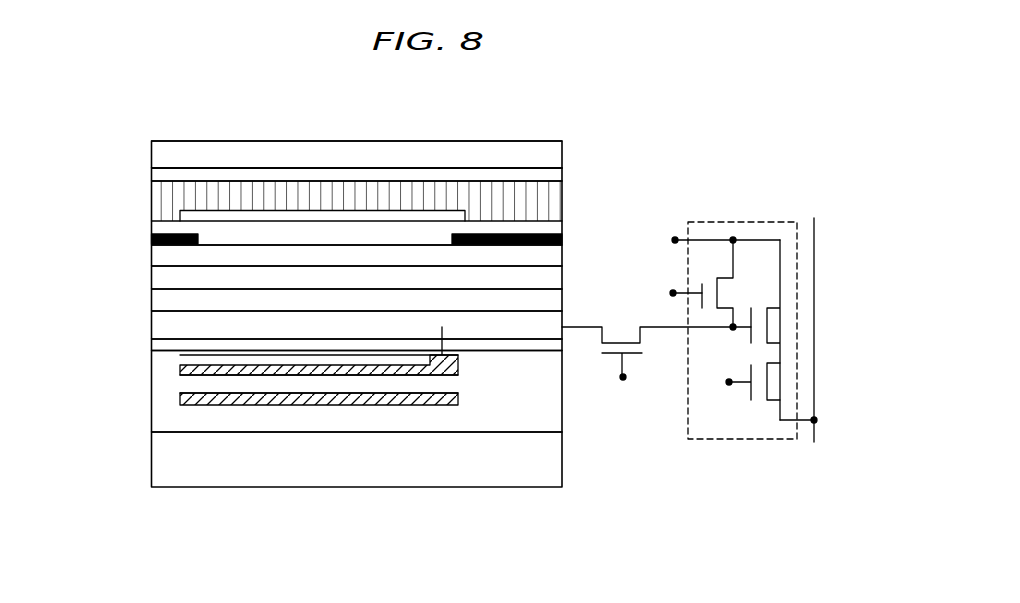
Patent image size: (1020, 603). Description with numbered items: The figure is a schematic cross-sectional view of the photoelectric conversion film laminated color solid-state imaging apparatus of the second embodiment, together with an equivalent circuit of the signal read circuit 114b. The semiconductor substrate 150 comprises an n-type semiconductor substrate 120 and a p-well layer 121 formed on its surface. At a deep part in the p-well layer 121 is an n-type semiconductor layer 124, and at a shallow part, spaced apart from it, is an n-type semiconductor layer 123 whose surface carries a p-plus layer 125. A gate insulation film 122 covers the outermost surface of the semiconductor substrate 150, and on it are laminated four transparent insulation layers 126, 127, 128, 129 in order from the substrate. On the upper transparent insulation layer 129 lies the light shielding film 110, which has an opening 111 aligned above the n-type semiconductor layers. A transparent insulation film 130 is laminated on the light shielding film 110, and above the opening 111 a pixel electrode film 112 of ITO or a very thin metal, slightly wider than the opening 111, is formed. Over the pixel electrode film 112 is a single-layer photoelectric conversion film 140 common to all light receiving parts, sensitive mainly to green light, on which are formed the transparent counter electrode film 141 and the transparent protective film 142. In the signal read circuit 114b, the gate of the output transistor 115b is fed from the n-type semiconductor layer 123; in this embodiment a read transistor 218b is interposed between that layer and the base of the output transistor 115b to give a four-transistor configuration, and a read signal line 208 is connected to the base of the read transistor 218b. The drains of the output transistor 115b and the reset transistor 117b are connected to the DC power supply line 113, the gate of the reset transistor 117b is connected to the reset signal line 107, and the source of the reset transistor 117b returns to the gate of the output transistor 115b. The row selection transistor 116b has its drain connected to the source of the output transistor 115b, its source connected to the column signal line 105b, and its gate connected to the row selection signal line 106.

The column signal line 105b is at (814, 432).
The row selection signal line 106 is at (729, 382).
The reset signal line 107 is at (673, 293).
The light shielding film 110 is at (158, 240).
The opening 111 is at (449, 232).
The pixel electrode film 112 is at (331, 212).
The DC power supply line 113 is at (675, 240).
The signal read circuit 114b is at (760, 222).
The output transistor 115b is at (767, 333).
The row selection transistor 116b is at (767, 390).
The reset transistor 117b is at (720, 293).
The n-type semiconductor substrate 120 is at (550, 457).
The p-well layer 121 is at (552, 408).
The gate insulation film 122 is at (163, 348).
The n-type semiconductor layer 123 is at (180, 370).
The n-type semiconductor layer 124 is at (178, 402).
The p+ layer 125 is at (328, 393).
The transparent insulation layer 126 is at (163, 333).
The transparent insulation layer 127 is at (163, 299).
The transparent insulation layer 128 is at (160, 277).
The transparent insulation layer 129 is at (160, 255).
The transparent insulation film 130 is at (158, 222).
The photoelectric conversion film 140 is at (253, 187).
The counter electrode film 141 is at (157, 172).
The transparent protective film 142 is at (200, 155).
The semiconductor substrate 150 is at (630, 425).
The read signal line 208 is at (623, 377).
The read transistor 218b is at (620, 333).